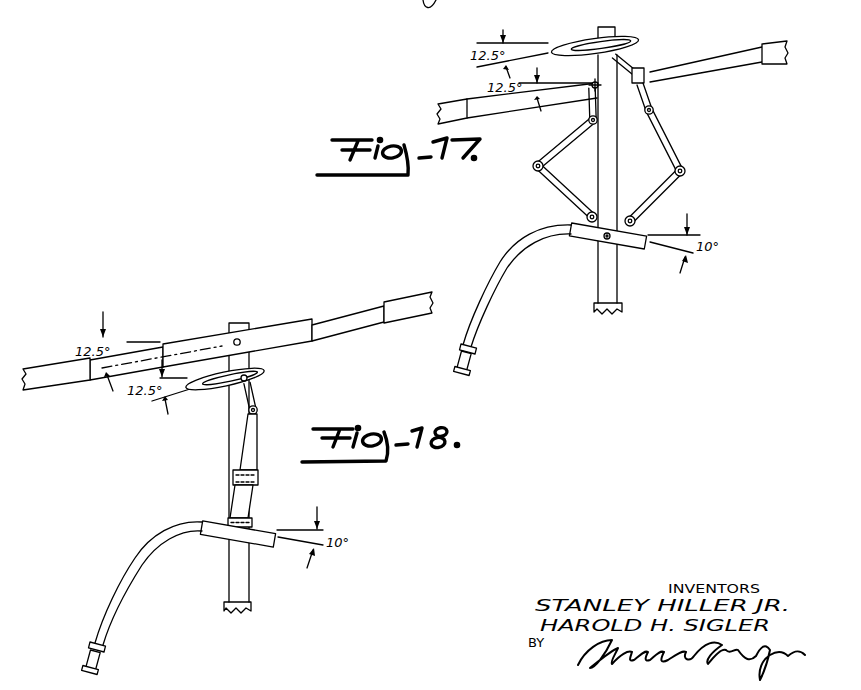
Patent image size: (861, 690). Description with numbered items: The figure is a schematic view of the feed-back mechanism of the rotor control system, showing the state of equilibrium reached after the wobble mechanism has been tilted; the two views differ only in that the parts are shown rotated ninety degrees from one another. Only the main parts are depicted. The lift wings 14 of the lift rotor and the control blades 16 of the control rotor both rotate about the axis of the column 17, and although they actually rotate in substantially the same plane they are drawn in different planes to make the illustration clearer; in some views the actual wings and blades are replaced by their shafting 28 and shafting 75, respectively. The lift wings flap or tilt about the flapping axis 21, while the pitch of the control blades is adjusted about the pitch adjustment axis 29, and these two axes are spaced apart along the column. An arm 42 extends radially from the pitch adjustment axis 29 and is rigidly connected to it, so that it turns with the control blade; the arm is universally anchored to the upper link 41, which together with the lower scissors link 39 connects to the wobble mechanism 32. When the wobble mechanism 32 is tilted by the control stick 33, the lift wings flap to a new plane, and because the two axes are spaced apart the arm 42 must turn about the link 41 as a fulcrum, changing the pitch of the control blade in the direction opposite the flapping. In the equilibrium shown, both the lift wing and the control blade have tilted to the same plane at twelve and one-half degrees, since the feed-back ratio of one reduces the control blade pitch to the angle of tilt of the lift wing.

In FIG. 17, the lift wings 14 is at (621, 33).
In FIG. 18, the control blades 16 is at (213, 395).
In FIG. 17, the column 17 is at (616, 283).
In FIG. 18, the column 17 is at (247, 586).
In FIG. 17, the flapping axis 21 is at (548, 43).
In FIG. 18, the flapping axis 21 is at (245, 341).
In FIG. 18, the shafting 28 is at (135, 354).
In FIG. 17, the pitch adjustment axis 29 is at (592, 83).
In FIG. 18, the pitch adjustment axis 29 is at (257, 377).
In FIG. 17, the wobble mechanism 32 is at (588, 240).
In FIG. 18, the wobble mechanism 32 is at (217, 542).
In FIG. 17, the control stick 33 is at (487, 315).
In FIG. 18, the control stick 33 is at (127, 577).
In FIG. 17, the scissors link 39 is at (561, 195).
In FIG. 18, the scissors link 39 is at (254, 501).
In FIG. 17, the link 41 is at (562, 144).
In FIG. 18, the link 41 is at (258, 438).
In FIG. 17, the arm 42 is at (588, 108).
In FIG. 18, the arm 42 is at (298, 404).
In FIG. 17, the shafting 75 is at (705, 63).